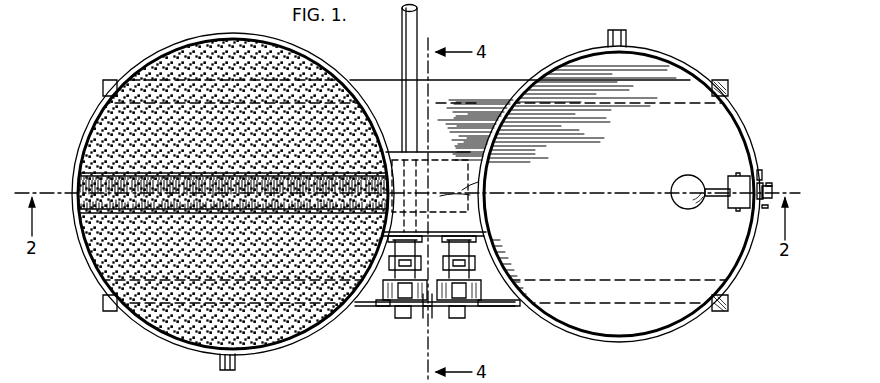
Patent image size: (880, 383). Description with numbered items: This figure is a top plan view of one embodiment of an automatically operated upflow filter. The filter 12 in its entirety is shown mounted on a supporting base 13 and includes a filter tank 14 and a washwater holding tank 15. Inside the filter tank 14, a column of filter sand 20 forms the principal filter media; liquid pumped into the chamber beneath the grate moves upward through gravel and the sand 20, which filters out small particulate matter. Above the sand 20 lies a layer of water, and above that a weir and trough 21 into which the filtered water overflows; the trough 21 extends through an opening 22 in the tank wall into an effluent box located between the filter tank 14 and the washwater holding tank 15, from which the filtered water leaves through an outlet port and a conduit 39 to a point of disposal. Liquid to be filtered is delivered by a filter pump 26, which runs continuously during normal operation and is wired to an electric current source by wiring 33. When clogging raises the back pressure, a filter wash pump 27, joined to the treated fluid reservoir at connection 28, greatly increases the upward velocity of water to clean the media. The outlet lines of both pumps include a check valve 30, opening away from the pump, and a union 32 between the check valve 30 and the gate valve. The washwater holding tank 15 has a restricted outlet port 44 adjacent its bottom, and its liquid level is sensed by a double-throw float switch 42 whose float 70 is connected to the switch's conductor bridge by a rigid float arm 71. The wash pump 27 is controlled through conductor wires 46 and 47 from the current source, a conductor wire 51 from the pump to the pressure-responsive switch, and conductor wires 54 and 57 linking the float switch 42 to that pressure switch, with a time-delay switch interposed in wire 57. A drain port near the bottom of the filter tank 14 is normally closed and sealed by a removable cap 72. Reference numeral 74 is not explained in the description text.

The filter 12 is at (521, 70).
The supporting base 13 is at (490, 88).
The filter tank 14 is at (130, 323).
The washwater holding tank 15 is at (754, 132).
The filter sand 20 is at (260, 340).
The weir and trough 21 is at (214, 182).
The opening 22 is at (406, 160).
The filter pump 26 is at (388, 310).
The filter wash pump 27 is at (490, 278).
The connection 28 is at (405, 316).
The check valve 30 is at (390, 262).
The union 32 is at (398, 236).
The wiring 33 is at (370, 312).
The conduit 39 is at (418, 26).
The float switch 42 is at (775, 189).
The restricted outlet port 44 is at (626, 34).
The conductor wire 46 is at (768, 186).
The conductor wire 47 is at (430, 320).
The conductor wire 51 is at (500, 310).
The conductor wire 54 is at (762, 184).
The conductor wire 57 is at (766, 208).
The float 70 is at (688, 210).
The float arm 71 is at (715, 197).
The removable cap 72 is at (220, 366).
The level indicator line 74 is at (468, 193).